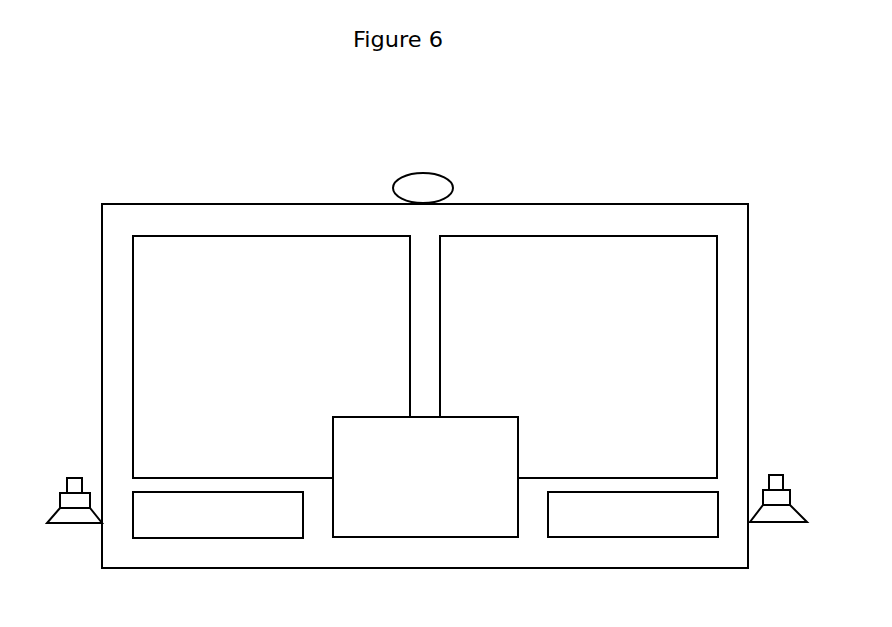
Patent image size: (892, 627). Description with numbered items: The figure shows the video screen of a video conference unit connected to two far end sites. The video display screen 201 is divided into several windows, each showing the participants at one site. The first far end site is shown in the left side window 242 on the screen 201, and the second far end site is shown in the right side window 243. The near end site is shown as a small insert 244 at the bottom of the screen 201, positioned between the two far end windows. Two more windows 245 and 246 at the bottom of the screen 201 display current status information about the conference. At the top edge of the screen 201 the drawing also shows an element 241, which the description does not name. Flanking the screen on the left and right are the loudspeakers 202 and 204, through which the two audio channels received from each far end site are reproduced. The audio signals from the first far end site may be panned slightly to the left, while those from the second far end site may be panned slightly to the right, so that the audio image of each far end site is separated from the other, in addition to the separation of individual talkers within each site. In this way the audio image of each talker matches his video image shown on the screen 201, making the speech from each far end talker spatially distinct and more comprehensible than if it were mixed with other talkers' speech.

The video display screen 201 is at (720, 204).
The camera 241 is at (424, 173).
The left side window 242 is at (410, 338).
The right side window 243 is at (717, 365).
The small insert 244 is at (427, 537).
The status window 245 is at (211, 538).
The status window 246 is at (595, 537).
The loudspeaker 202 is at (66, 479).
The loudspeaker 204 is at (783, 474).